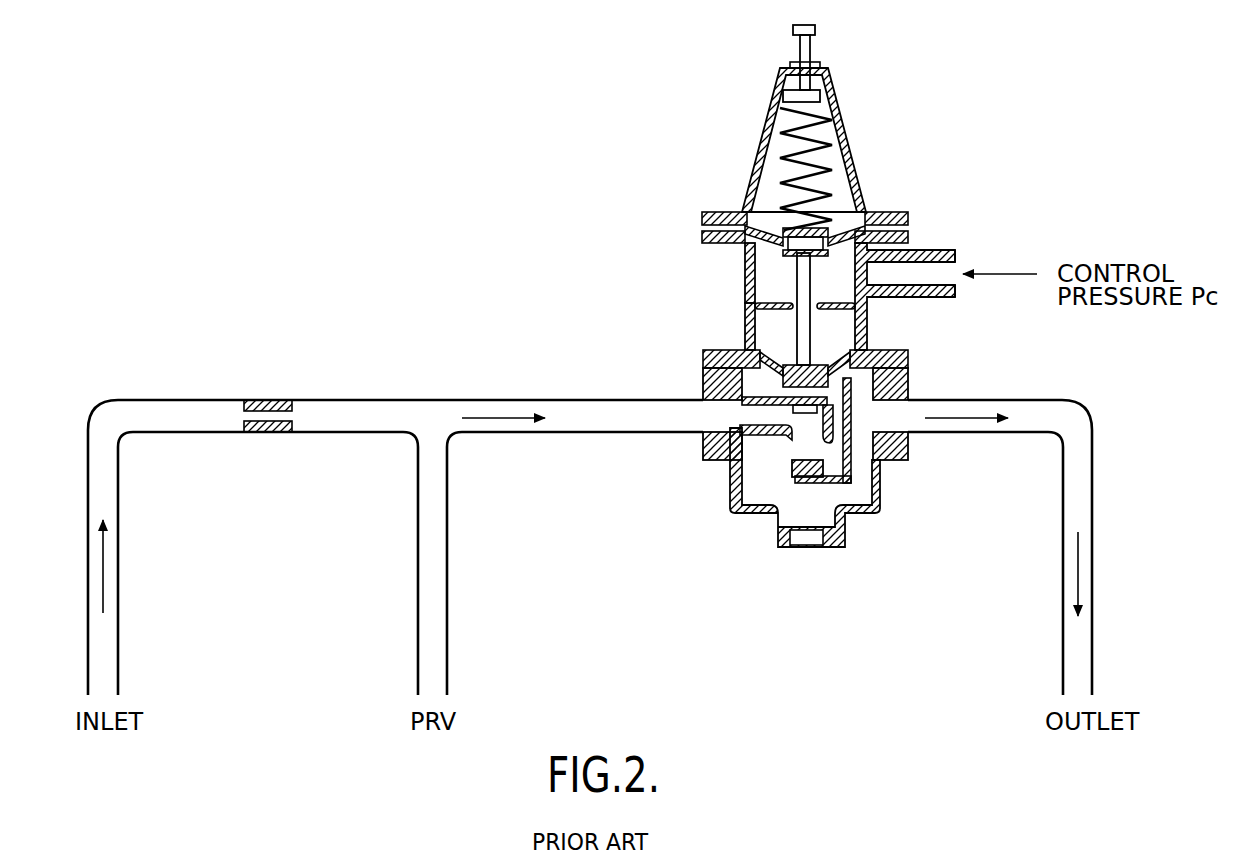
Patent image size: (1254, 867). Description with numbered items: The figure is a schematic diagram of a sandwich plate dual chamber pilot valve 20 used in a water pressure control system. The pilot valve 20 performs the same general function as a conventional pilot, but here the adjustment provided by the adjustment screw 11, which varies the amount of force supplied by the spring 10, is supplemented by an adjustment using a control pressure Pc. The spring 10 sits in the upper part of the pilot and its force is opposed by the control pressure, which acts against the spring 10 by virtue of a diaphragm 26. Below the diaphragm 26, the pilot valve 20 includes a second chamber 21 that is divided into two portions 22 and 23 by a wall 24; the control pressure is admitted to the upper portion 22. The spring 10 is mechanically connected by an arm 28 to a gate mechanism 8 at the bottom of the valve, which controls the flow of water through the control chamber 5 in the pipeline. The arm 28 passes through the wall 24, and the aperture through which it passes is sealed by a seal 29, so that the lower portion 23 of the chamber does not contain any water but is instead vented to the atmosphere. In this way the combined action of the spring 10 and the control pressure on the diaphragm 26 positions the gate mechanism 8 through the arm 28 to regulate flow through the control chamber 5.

The control chamber 5 is at (855, 493).
The gate mechanism 8 is at (788, 483).
The spring 10 is at (857, 165).
The adjustment screw 11 is at (816, 30).
The dual chamber pilot valve 20 is at (892, 84).
The second chamber 21 is at (716, 290).
The first portion of second chamber 22 is at (765, 268).
The second portion of second chamber 23 is at (765, 327).
The wall 24 is at (860, 310).
The diaphragm 26 is at (765, 222).
The arm 28 is at (808, 347).
The seal 29 is at (818, 306).